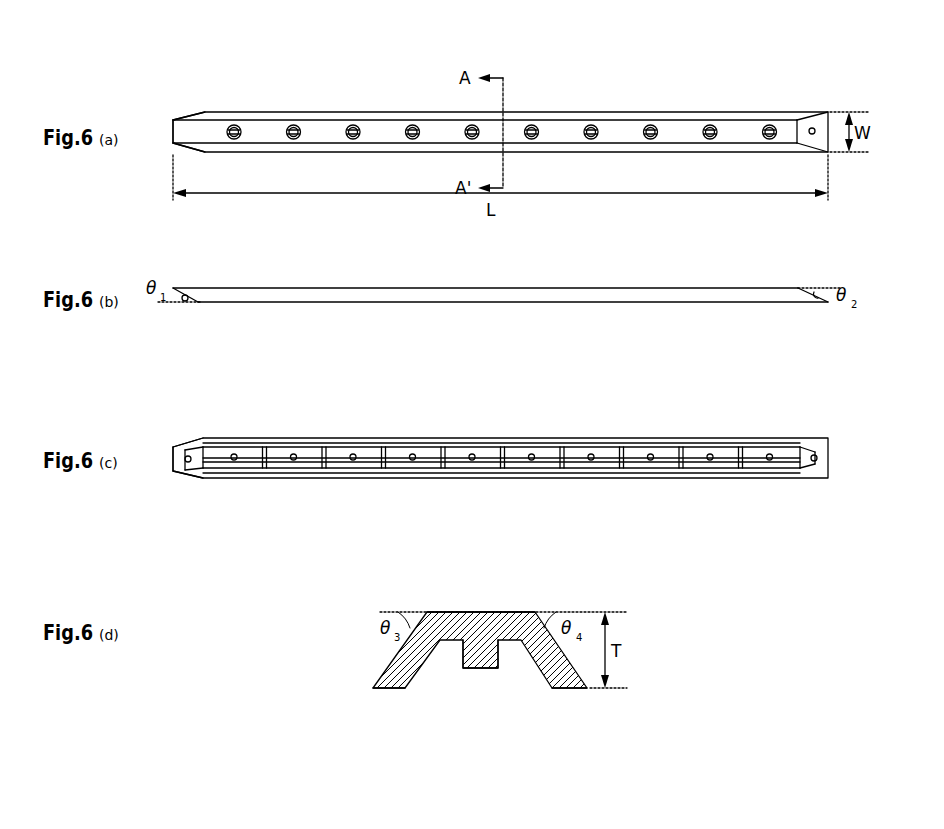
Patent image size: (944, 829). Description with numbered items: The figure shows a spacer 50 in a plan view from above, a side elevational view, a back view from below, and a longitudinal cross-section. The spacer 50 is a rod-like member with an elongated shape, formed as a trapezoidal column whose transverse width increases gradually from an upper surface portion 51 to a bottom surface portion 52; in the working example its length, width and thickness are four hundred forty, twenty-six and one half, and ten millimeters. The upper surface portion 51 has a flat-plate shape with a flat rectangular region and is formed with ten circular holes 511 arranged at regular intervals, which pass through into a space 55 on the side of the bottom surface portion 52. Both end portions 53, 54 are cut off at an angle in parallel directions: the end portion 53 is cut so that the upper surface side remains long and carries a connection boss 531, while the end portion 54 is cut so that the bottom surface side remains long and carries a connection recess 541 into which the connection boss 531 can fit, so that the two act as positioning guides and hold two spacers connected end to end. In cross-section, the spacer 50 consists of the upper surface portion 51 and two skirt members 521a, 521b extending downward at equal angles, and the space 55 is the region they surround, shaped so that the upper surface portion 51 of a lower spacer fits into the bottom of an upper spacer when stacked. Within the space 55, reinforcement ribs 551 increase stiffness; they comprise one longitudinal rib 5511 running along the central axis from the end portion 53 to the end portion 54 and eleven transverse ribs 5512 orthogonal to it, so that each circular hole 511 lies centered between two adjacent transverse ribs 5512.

In FIG. 6A, the spacer 50 is at (495, 106).
In FIG. 6B, the spacer 50 is at (485, 296).
In FIG. 6C, the spacer 50 is at (502, 445).
In FIG. 6D, the spacer 50 is at (481, 655).
In FIG. 6A, the upper surface portion 51 is at (270, 121).
In FIG. 6B, the upper surface portion 51 is at (465, 287).
In FIG. 6D, the upper surface portion 51 is at (468, 611).
In FIG. 6A, the circular holes 511 is at (235, 124).
In FIG. 6B, the bottom surface portion 52 is at (464, 303).
In FIG. 6D, the skirt member 521a is at (383, 690).
In FIG. 6D, the skirt member 521b is at (572, 690).
In FIG. 6A, the end portion 53 is at (173, 121).
In FIG. 6B, the end portion 53 is at (183, 320).
In FIG. 6C, the end portion 53 is at (160, 475).
In FIG. 6B, the connection boss 531 is at (182, 301).
In FIG. 6C, the connection boss 531 is at (187, 479).
In FIG. 6A, the end portion 54 is at (828, 140).
In FIG. 6B, the end portion 54 is at (826, 303).
In FIG. 6C, the end portion 54 is at (843, 470).
In FIG. 6A, the connection recess 541 is at (812, 135).
In FIG. 6C, the connection recess 541 is at (816, 463).
In FIG. 6C, the space 55 is at (501, 415).
In FIG. 6D, the space 55 is at (447, 655).
In FIG. 6C, the reinforcement ribs 551 is at (425, 392).
In FIG. 6D, the reinforcement ribs 551 is at (480, 670).
In FIG. 6C, the longitudinal rib 5511 is at (370, 452).
In FIG. 6C, the transverse ribs 5512 is at (436, 454).